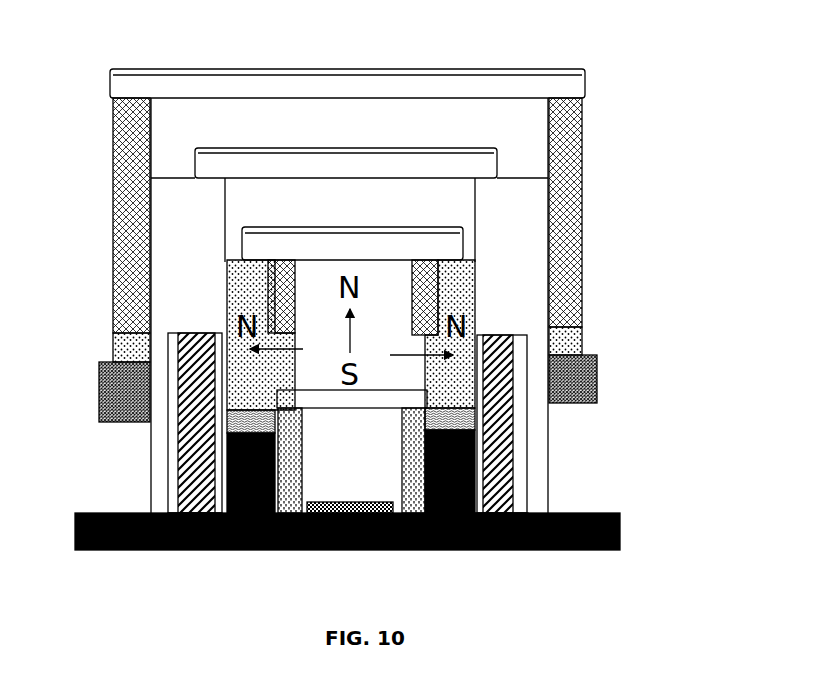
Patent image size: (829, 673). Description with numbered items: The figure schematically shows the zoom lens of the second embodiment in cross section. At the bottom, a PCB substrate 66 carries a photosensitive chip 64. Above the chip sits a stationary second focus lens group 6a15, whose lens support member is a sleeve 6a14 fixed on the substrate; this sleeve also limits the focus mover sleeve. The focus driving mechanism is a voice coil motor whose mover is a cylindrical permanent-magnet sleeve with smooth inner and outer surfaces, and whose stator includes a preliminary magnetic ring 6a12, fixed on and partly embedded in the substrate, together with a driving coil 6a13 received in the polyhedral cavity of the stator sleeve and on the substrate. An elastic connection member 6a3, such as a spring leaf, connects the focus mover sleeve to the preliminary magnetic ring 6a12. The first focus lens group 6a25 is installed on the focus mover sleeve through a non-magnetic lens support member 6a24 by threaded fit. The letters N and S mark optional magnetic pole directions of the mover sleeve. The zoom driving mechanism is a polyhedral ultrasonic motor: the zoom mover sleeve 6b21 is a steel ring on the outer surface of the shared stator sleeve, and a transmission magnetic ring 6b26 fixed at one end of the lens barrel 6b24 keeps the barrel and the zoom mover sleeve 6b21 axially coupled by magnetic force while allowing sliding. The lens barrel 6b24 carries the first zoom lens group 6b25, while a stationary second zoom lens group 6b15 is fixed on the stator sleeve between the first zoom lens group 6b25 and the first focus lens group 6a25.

The first zoom lens group 6b25 is at (292, 82).
The second focus lens group 6a15 is at (318, 402).
The first focus lens group 6a25 is at (402, 243).
The second zoom lens group 6b15 is at (475, 165).
The lens barrel 6b24 is at (564, 172).
The lens support member 6a24 is at (427, 292).
The transmission magnetic ring 6b26 is at (583, 335).
The zoom mover sleeve 6b21 is at (600, 381).
The elastic connection member 6a3 is at (480, 422).
The preliminary magnetic ring 6a12 is at (257, 507).
The photosensitive chip 64 is at (353, 505).
The sleeve 6a14 is at (412, 515).
The driving coil 6a13 is at (503, 533).
The PCB substrate 66 is at (593, 527).